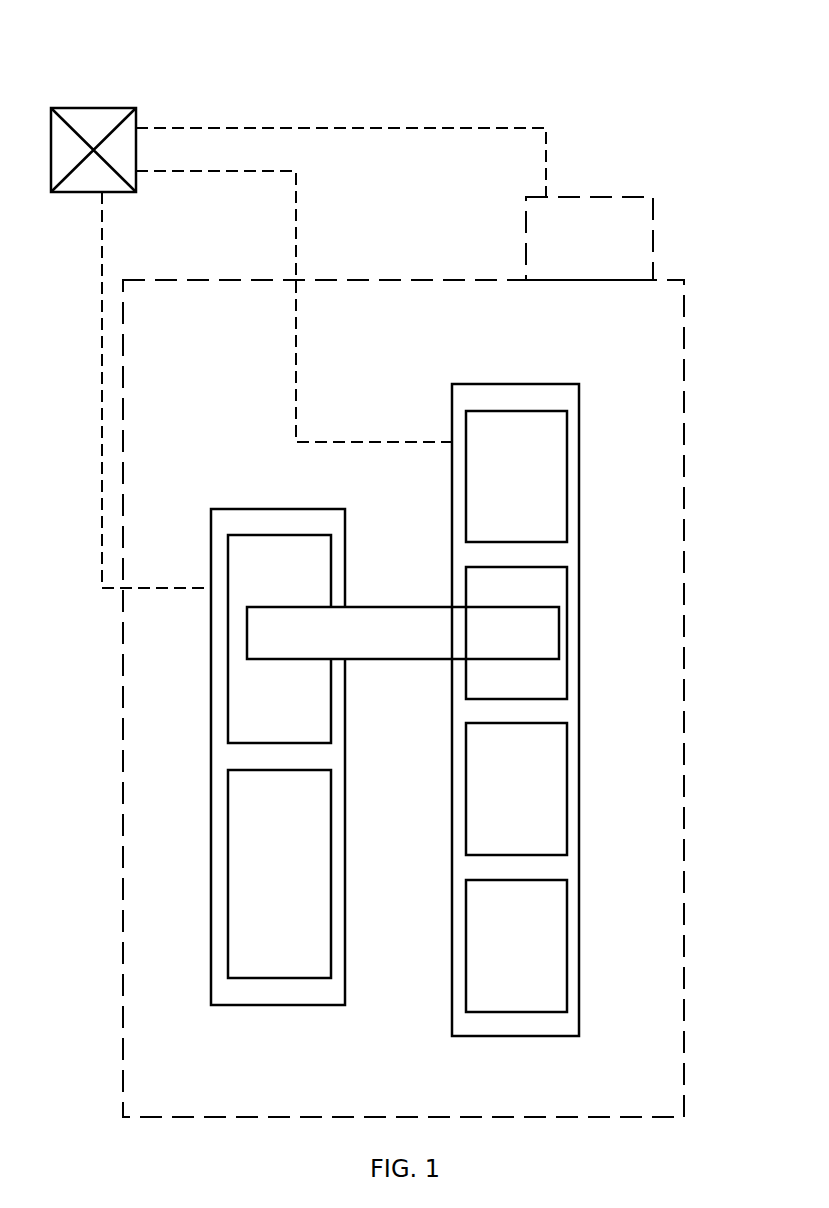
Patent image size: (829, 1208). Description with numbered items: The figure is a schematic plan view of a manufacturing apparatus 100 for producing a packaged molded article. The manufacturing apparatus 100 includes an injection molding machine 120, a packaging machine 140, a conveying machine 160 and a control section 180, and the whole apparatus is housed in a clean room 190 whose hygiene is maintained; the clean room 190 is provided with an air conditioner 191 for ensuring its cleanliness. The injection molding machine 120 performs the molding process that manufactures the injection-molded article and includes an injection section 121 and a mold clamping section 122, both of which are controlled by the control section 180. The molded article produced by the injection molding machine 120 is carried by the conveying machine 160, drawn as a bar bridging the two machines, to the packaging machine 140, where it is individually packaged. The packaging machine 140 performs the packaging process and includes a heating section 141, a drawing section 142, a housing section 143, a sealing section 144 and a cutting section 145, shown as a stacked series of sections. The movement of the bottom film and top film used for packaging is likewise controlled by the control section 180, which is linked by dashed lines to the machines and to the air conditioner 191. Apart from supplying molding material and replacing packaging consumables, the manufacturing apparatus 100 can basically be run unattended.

The manufacturing apparatus 100 is at (396, 62).
The injection molding machine 120 is at (314, 737).
The injection section 121 is at (331, 900).
The mold clamping section 122 is at (331, 727).
The packaging machine 140 is at (557, 690).
The heating section 141 is at (567, 478).
The drawing section 142 is at (634, 468).
The housing section 143 is at (567, 657).
The sealing section 144 is at (567, 797).
The cutting section 145 is at (567, 938).
The conveying machine 160 is at (410, 607).
The control section 180 is at (97, 108).
The clean room 190 is at (684, 363).
The air conditioner 191 is at (653, 243).